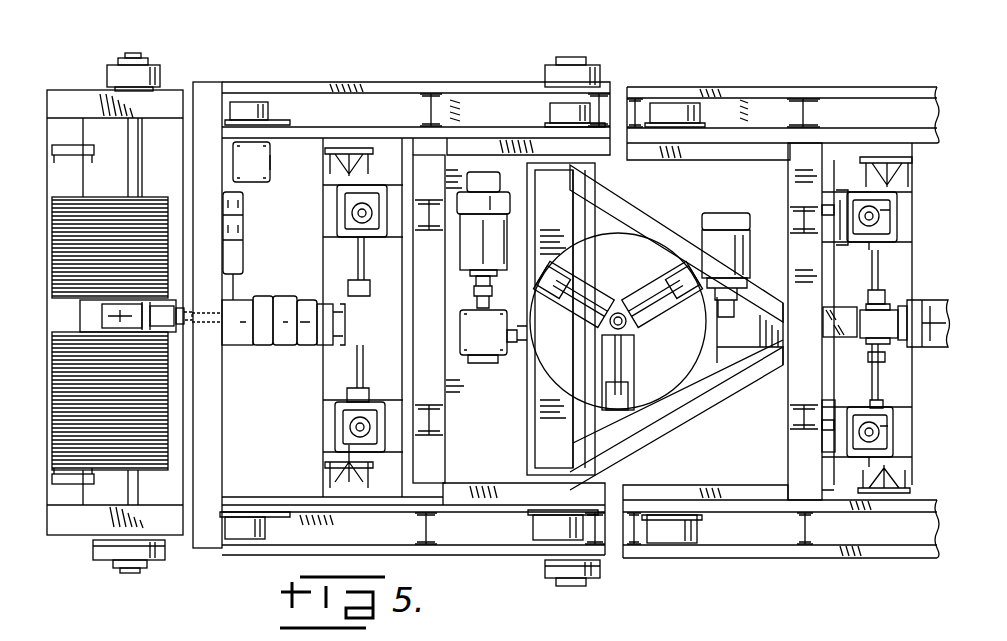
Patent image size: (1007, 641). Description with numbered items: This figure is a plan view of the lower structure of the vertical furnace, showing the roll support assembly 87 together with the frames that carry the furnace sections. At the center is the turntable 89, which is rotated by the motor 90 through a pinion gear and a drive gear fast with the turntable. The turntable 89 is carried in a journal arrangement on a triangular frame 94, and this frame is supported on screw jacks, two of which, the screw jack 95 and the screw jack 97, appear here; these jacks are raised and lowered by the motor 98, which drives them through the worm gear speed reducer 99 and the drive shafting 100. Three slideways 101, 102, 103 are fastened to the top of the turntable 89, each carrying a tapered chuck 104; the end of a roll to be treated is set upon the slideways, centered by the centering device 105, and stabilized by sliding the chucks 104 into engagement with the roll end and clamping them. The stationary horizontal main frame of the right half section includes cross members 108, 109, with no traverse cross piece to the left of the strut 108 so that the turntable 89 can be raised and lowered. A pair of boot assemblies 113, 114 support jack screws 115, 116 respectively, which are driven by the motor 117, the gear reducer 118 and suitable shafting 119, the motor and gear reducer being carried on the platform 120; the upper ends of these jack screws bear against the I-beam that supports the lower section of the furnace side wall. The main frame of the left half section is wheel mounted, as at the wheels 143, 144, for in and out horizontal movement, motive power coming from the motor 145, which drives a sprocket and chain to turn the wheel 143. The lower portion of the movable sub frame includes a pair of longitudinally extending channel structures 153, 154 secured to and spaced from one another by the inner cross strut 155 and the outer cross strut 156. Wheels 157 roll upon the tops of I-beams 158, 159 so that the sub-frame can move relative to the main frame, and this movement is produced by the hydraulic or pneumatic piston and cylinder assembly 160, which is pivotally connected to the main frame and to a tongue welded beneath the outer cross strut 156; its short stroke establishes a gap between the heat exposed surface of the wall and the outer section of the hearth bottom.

The roll support assembly 87 is at (650, 416).
The turntable 89 is at (672, 378).
The motor 90 is at (745, 250).
The triangular frame 94 is at (636, 214).
The screw jack 95 is at (580, 440).
The screw jack 97 is at (588, 195).
The motor 98 is at (470, 244).
The worm gear speed reducer 99 is at (490, 306).
The drive shafting 100 is at (518, 355).
The slideway 101 is at (602, 360).
The slideway 102 is at (586, 285).
The slideway 103 is at (654, 285).
The tapered chuck 104 is at (682, 290).
The centering device 105 is at (618, 311).
The cross member 108 is at (823, 500).
The cross member 109 is at (912, 500).
The boot assembly 113 is at (832, 448).
The boot assembly 114 is at (834, 236).
The jack screw 115 is at (882, 432).
The jack screw 116 is at (880, 216).
The motor 117 is at (290, 338).
The gear reducer 118 is at (866, 338).
The shafting 119 is at (882, 380).
The platform 120 is at (836, 312).
The wheel 143 is at (162, 70).
The wheel 144 is at (562, 570).
The motor 145 is at (243, 222).
The channel structure 153 is at (370, 520).
The channel structure 154 is at (345, 98).
The inner cross strut 155 is at (444, 390).
The outer cross strut 156 is at (214, 465).
The wheel 157 is at (266, 106).
The I-beam 158 is at (78, 518).
The I-beam 159 is at (62, 95).
The piston and cylinder assembly 160 is at (165, 322).